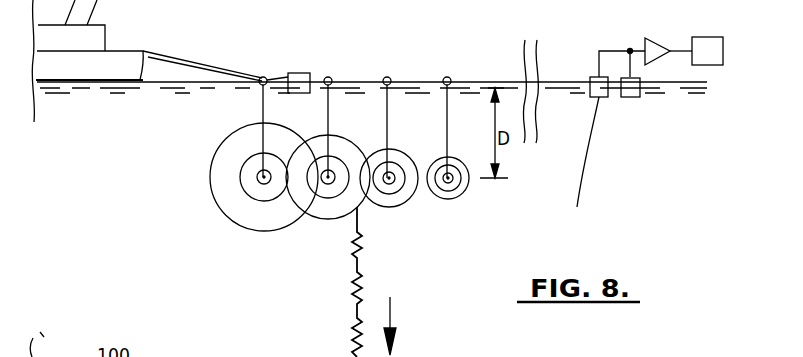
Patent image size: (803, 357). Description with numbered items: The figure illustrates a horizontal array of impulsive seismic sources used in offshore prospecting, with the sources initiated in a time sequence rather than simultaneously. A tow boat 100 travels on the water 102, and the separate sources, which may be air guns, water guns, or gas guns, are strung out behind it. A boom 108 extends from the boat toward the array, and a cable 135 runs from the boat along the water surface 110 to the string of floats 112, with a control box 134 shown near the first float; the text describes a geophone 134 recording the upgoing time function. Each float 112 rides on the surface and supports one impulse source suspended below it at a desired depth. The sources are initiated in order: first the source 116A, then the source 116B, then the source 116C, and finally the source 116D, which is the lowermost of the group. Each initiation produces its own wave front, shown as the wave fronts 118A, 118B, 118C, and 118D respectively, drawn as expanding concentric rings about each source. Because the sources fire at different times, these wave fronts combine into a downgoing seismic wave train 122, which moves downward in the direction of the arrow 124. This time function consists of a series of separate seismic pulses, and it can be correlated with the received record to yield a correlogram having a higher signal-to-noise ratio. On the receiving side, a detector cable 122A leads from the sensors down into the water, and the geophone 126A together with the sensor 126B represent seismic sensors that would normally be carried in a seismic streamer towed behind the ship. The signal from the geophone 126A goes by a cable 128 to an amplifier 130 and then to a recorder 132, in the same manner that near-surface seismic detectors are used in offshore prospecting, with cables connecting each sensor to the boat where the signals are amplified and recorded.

The tow boat 100 is at (113, 50).
The water 102 is at (112, 173).
The boom 108 is at (217, 72).
The water surface 110 is at (417, 81).
The float 112 is at (445, 78).
The first impulsive source 116A is at (263, 184).
The second impulsive source 116B is at (328, 184).
The third impulsive source 116C is at (389, 184).
The fourth impulsive source 116D is at (453, 191).
The wave front 118A is at (223, 217).
The wave front 118B is at (310, 217).
The wave front 118C is at (412, 204).
The wave front 118D is at (468, 190).
The downgoing seismic wave train 122 is at (352, 343).
The detector cable 122A is at (590, 179).
The arrow 124 is at (390, 312).
The geophone 126A is at (603, 97).
The sensor 126B is at (638, 97).
The cable 128 is at (612, 51).
The amplifier 130 is at (647, 43).
The recorder 132 is at (692, 42).
The geophone 134 is at (312, 73).
The tow cable 135 is at (233, 70).